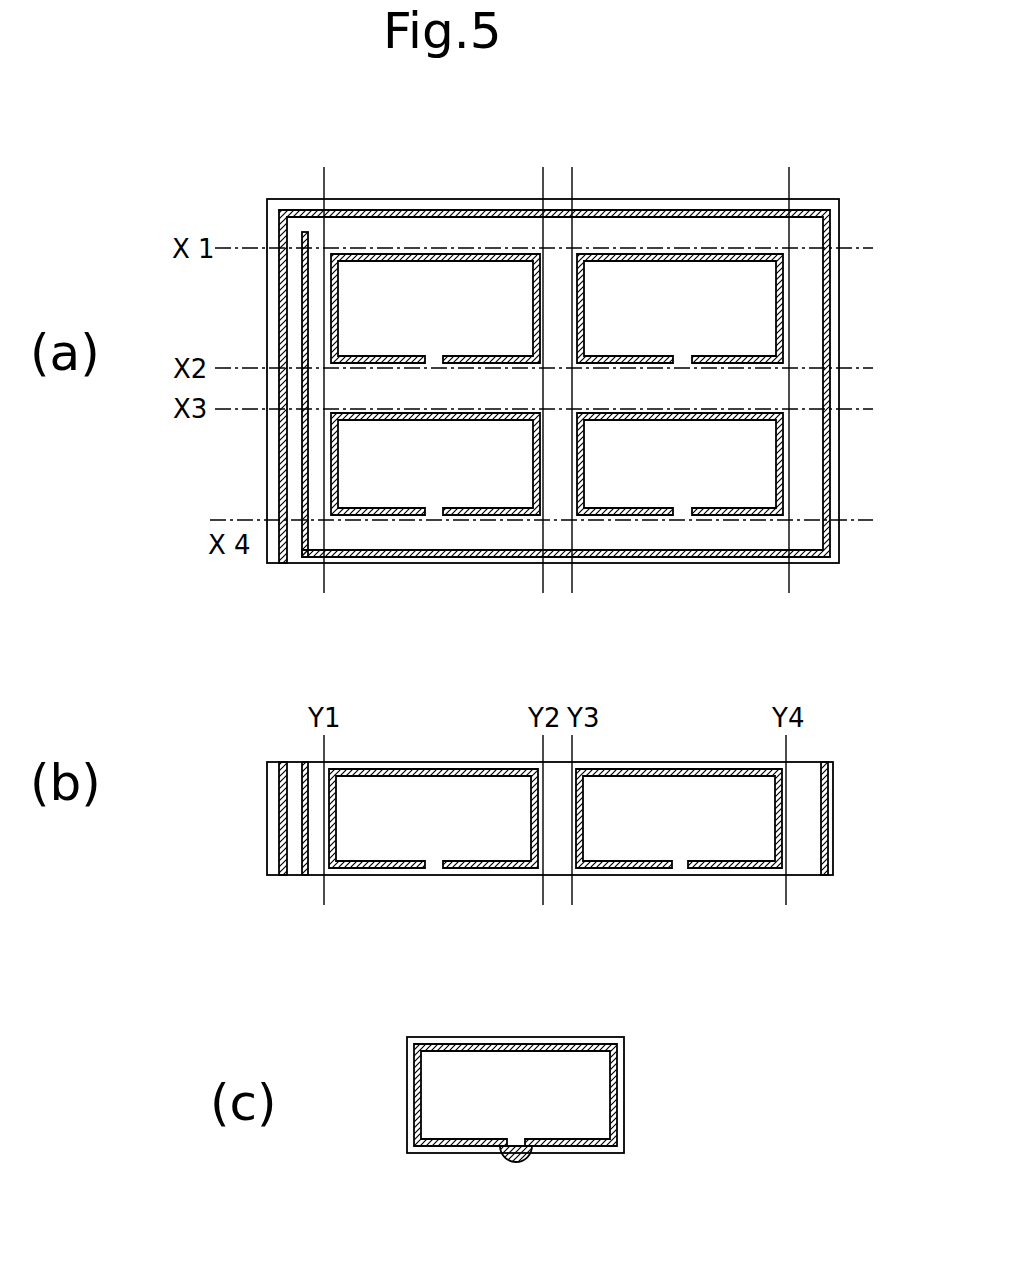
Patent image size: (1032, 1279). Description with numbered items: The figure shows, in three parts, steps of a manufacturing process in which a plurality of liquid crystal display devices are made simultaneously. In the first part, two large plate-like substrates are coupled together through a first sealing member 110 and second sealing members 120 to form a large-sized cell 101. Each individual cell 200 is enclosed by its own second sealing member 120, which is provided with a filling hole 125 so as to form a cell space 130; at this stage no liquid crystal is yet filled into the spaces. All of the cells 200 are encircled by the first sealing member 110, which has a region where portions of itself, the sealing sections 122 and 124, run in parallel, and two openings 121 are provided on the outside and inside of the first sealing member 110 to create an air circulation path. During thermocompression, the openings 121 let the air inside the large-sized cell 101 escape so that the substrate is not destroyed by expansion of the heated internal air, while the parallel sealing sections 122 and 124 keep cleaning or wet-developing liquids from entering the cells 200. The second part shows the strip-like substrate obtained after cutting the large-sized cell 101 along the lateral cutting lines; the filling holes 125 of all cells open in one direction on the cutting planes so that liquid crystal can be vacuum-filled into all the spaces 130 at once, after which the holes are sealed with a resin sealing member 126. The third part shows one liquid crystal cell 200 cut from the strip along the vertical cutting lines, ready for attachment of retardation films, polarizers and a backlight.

The large-sized cell 101 is at (437, 199).
The first sealing member 110 is at (600, 209).
The second sealing member 120 is at (783, 290).
The opening 121 is at (296, 228).
The sealing section 122 is at (280, 447).
The sealing section 124 is at (302, 475).
The filling hole 125 is at (683, 362).
The connection conductor 126 is at (515, 1163).
The cell space 130 is at (392, 495).
The cell 200 is at (497, 514).